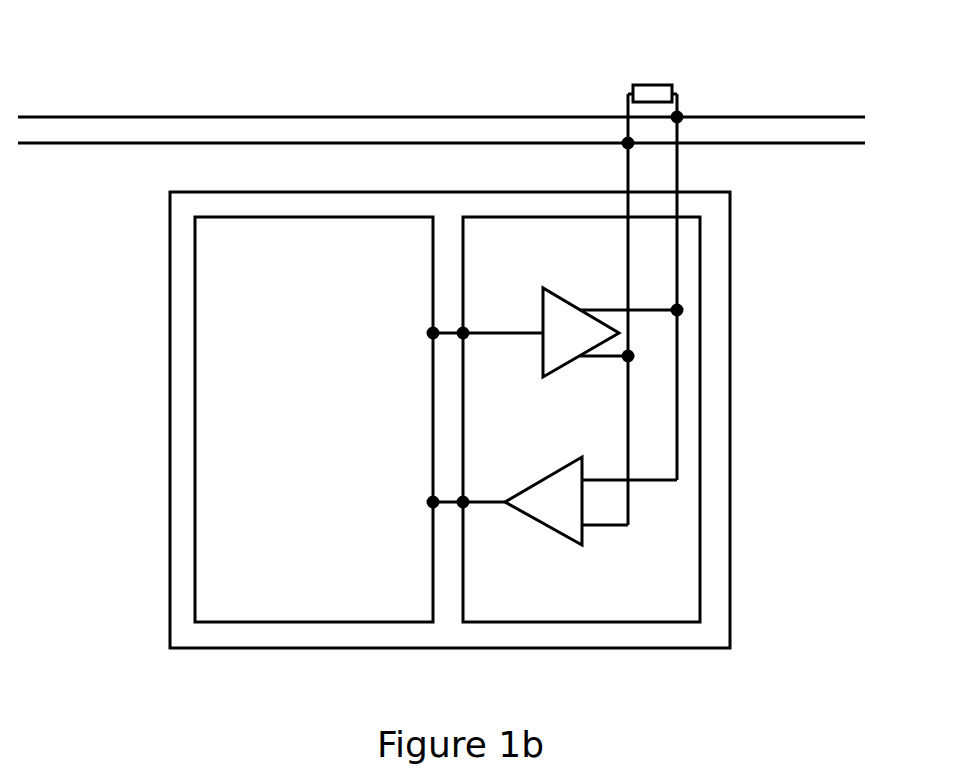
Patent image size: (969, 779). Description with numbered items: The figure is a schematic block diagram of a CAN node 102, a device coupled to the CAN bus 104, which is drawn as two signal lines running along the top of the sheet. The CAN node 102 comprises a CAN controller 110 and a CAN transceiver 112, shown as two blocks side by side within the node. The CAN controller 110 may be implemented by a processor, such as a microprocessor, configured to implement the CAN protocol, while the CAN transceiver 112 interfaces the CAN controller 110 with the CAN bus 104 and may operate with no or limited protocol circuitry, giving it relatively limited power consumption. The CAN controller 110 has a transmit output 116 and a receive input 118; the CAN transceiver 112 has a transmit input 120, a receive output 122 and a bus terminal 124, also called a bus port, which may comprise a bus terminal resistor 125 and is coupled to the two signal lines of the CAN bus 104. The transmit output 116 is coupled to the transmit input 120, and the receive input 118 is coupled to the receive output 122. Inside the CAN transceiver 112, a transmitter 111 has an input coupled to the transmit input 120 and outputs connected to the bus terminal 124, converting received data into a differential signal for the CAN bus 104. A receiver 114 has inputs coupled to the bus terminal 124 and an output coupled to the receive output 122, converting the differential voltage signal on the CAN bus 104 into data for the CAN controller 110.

The CAN node 102 is at (170, 313).
The CAN bus 104 is at (187, 108).
The CAN controller 110 is at (314, 419).
The transmitter 111 is at (575, 305).
The CAN transceiver 112 is at (649, 623).
The receiver 114 is at (584, 538).
The transmit output 116 is at (432, 329).
The receive input 118 is at (428, 507).
The transmit input 120 is at (465, 328).
The receive output 122 is at (466, 507).
The bus terminal 124 is at (682, 132).
The bus terminal resistor 125 is at (670, 57).